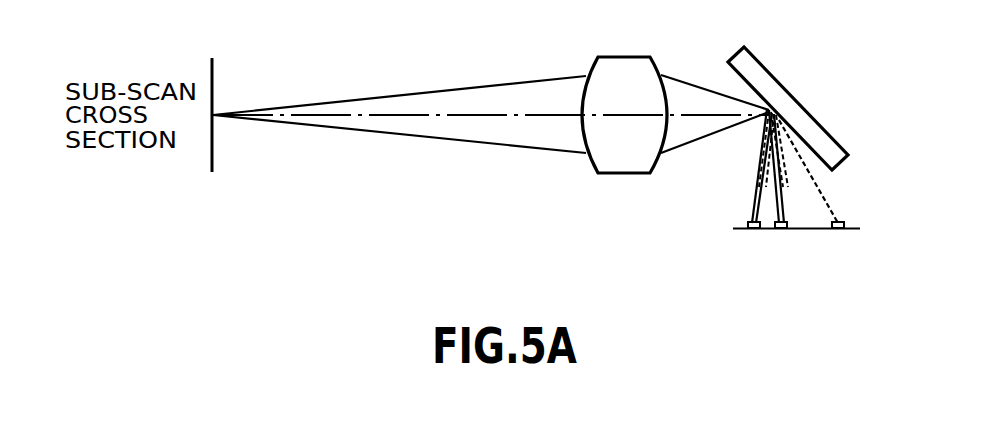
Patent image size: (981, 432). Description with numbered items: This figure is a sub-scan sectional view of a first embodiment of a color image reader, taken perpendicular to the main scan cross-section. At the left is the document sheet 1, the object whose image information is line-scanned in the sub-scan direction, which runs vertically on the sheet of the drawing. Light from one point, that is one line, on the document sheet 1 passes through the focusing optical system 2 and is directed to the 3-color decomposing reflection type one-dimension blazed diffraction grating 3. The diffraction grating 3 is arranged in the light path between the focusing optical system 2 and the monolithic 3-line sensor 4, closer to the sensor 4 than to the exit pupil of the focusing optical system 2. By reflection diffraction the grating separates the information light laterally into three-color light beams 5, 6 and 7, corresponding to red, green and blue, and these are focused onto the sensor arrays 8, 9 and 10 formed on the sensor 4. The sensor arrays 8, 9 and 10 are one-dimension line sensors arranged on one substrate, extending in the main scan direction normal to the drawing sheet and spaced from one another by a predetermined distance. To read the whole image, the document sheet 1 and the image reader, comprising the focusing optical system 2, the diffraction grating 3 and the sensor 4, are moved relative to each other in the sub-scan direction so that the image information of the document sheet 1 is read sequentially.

The document sheet 1 is at (212, 70).
The focusing optical system 2 is at (619, 64).
The 3-color decomposing reflection type one-dimension blazed diffraction grating 3 is at (767, 77).
The monolithic 3-line sensor 4 is at (851, 231).
The light beam 5 is at (760, 183).
The light beam 6 is at (785, 193).
The light beam 7 is at (818, 196).
The sensor array 8 is at (751, 231).
The sensor array 9 is at (782, 231).
The sensor array 10 is at (838, 231).